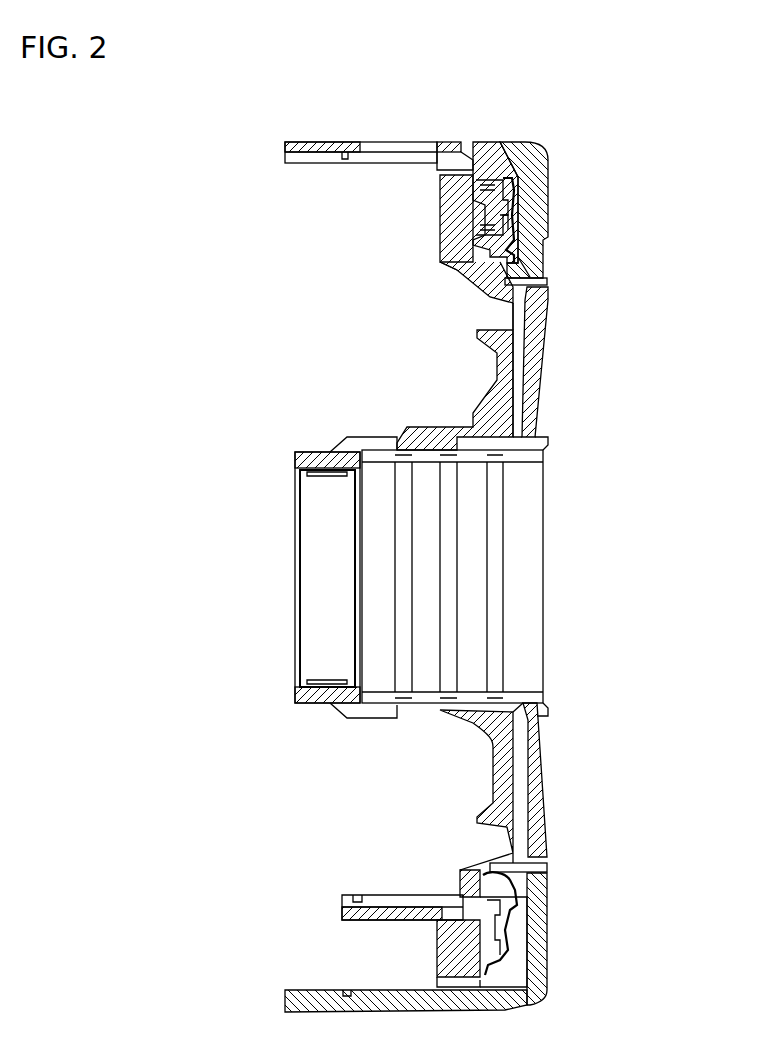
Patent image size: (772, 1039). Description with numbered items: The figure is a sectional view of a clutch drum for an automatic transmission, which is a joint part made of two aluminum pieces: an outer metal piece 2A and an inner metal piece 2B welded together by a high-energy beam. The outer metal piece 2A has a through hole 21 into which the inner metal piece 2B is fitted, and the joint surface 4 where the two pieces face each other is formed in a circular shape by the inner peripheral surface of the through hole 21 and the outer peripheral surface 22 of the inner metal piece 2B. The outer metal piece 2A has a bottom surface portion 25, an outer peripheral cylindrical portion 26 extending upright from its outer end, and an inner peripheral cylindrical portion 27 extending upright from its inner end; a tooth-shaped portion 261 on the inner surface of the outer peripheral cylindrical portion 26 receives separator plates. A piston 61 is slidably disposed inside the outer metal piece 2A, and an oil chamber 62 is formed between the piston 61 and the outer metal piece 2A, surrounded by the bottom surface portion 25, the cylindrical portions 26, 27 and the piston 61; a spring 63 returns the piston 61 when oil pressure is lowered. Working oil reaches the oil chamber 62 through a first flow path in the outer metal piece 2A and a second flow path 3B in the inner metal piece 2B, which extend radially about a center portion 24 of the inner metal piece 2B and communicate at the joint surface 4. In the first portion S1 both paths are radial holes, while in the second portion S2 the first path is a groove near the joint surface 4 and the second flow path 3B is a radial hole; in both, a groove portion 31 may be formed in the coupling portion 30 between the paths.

The outer metal piece 2A is at (540, 151).
The inner metal piece 2B is at (533, 392).
The second flow path 3B is at (533, 342).
The joint surface 4 is at (541, 278).
The through hole 21 is at (472, 296).
The outer peripheral surface 22 is at (522, 268).
The center portion 24 is at (548, 582).
The bottom surface portion 25 is at (533, 181).
The outer peripheral cylindrical portion 26 is at (345, 143).
The inner peripheral cylindrical portion 27 is at (470, 274).
The coupling portion 30 is at (476, 333).
The groove portion 31 is at (507, 857).
The piston 61 is at (508, 160).
The oil chamber 62 is at (520, 210).
The spring 63 is at (475, 160).
The tooth-shaped portion 261 is at (322, 158).
The first portion S1 is at (573, 301).
The second portion S2 is at (573, 861).